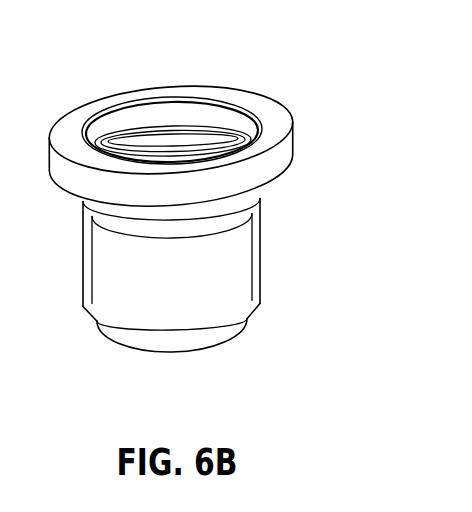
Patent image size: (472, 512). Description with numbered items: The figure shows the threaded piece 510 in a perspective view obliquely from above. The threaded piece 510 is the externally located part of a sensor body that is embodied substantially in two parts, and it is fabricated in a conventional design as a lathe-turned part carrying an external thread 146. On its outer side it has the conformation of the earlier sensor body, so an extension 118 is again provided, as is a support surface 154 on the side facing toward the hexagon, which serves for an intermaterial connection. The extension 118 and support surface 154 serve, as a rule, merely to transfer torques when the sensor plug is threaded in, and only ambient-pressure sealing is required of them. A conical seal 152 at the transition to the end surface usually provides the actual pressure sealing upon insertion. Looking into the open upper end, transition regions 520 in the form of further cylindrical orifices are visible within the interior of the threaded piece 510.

The extension 118 is at (283, 161).
The external thread 146 is at (253, 277).
The conical seal 152 is at (208, 338).
The support surface 154 is at (69, 134).
The threaded piece 510 is at (233, 243).
The transition regions 520 is at (97, 116).